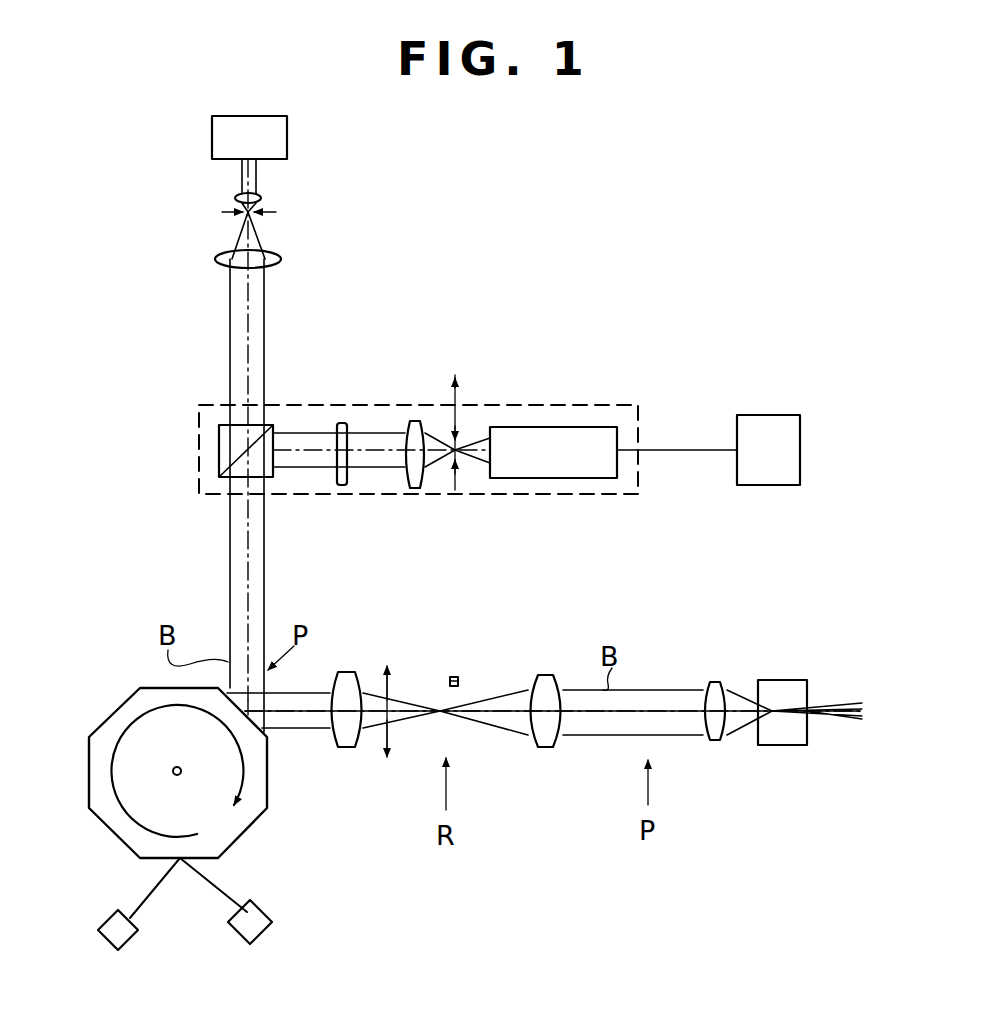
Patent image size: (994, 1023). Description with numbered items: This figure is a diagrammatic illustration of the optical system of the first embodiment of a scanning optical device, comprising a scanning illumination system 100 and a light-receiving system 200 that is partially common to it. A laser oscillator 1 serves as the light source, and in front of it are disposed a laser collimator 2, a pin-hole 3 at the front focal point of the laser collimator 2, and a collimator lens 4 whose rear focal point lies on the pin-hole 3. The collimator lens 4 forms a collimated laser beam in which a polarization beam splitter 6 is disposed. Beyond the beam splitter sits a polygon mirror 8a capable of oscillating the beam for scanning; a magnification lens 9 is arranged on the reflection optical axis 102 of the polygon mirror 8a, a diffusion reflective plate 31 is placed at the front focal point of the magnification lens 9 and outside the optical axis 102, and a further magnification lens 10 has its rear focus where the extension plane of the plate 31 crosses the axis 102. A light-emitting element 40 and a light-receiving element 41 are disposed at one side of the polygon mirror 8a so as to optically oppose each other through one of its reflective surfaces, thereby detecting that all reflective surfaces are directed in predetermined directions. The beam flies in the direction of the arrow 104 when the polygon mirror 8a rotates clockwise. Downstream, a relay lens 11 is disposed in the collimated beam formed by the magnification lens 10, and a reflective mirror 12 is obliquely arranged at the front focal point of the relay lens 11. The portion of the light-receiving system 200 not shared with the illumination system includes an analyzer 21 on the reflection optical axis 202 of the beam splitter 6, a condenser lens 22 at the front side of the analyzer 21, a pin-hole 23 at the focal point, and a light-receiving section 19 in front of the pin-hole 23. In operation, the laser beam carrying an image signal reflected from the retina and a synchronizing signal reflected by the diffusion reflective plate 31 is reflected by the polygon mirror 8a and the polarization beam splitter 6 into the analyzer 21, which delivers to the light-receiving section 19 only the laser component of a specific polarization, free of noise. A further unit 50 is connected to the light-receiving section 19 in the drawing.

The laser oscillator 1 is at (288, 136).
The laser collimator 2 is at (262, 196).
The pin-hole 3 is at (278, 212).
The collimator lens 4 is at (282, 253).
The polarization beam splitter 6 is at (218, 443).
The polygon mirror 8a is at (250, 832).
The magnification lens 9 is at (345, 748).
The magnification lens 10 is at (548, 748).
The relay lens 11 is at (715, 742).
The reflective mirror 12 is at (776, 680).
The light-receiving section 19 is at (590, 427).
The analyzer 21 is at (342, 423).
The condenser lens 22 is at (415, 421).
The pin-hole 23 is at (458, 440).
The diffusion reflective plate 31 is at (458, 676).
The light-emitting element 40 is at (272, 930).
The light-receiving element 41 is at (136, 938).
The signal processing unit 50 is at (760, 415).
The scanning illumination system 100 is at (226, 582).
The reflection optical axis 102 is at (295, 728).
The arrow 104 is at (388, 665).
The light-receiving system 200 is at (334, 498).
The reflection optical axis 202 is at (365, 452).